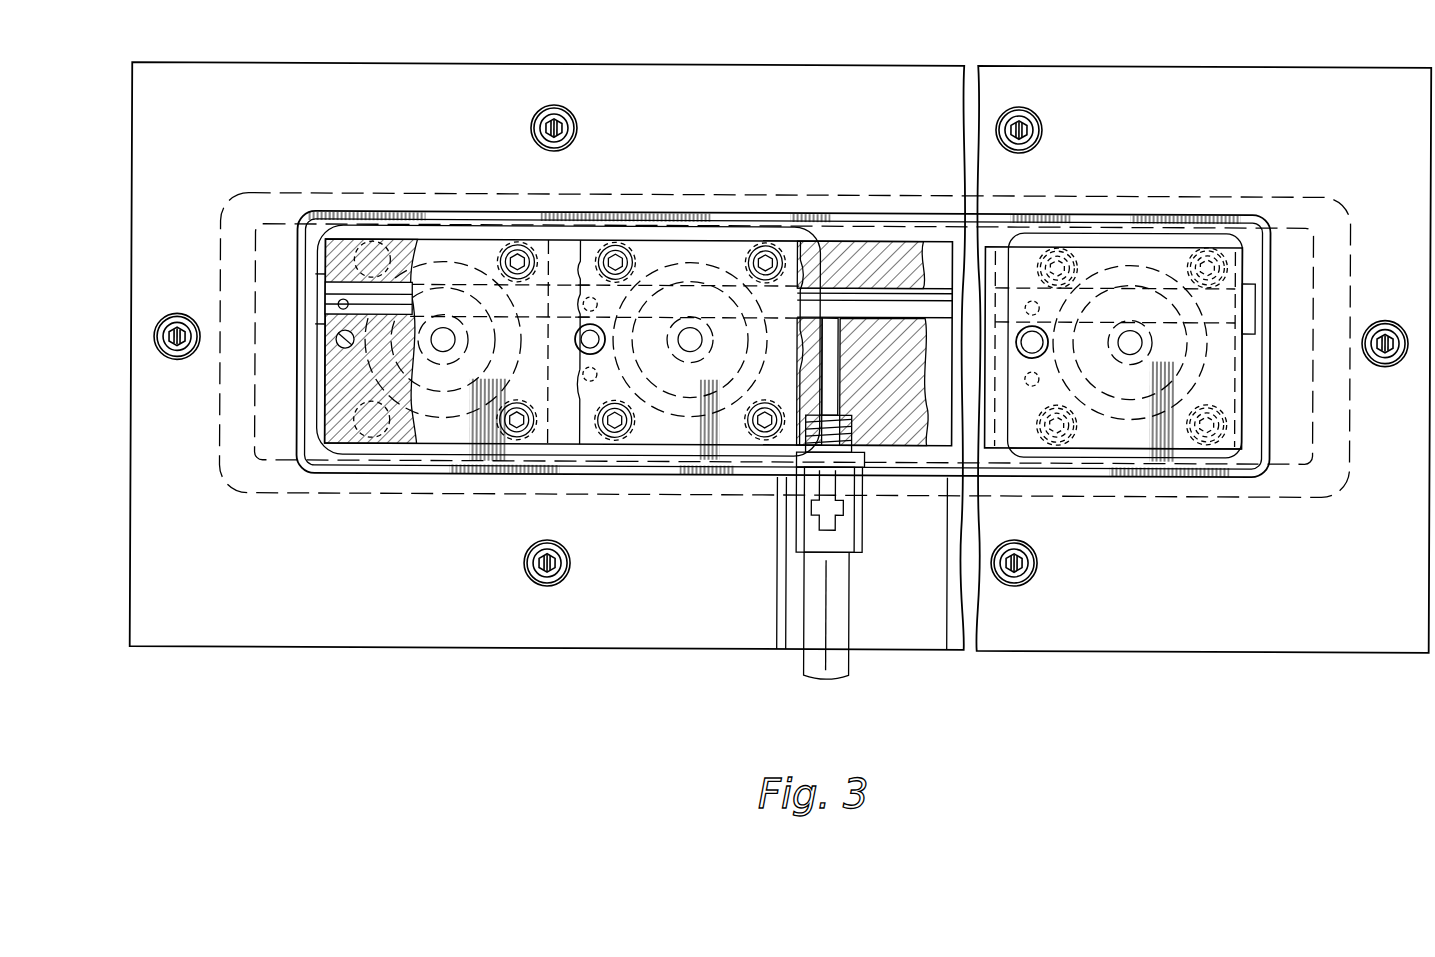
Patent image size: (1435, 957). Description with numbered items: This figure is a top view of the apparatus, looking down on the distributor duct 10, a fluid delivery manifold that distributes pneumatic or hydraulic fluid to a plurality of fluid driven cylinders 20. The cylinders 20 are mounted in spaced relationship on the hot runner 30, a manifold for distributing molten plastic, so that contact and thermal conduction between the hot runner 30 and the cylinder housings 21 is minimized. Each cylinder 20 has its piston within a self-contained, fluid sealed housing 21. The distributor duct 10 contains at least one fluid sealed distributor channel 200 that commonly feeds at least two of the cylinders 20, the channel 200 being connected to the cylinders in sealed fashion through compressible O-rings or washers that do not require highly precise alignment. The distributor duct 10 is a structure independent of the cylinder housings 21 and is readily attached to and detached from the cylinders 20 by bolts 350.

The distributor duct 10 is at (692, 240).
The fluid driven cylinders 20 is at (465, 232).
The cylinder housing 21 is at (1200, 462).
The hot runner 30 is at (598, 222).
The fluid sealed distributor channel 200 is at (850, 300).
The bolts 350 is at (578, 358).